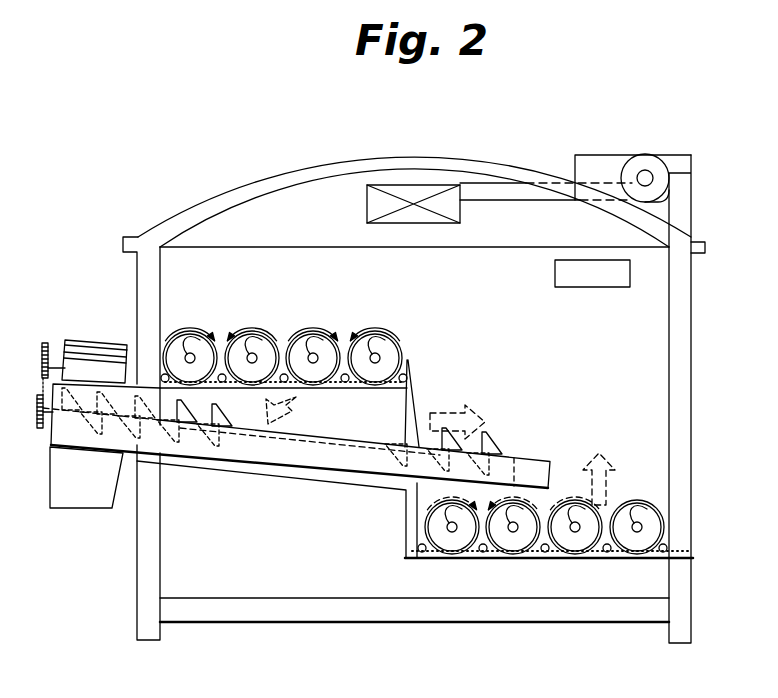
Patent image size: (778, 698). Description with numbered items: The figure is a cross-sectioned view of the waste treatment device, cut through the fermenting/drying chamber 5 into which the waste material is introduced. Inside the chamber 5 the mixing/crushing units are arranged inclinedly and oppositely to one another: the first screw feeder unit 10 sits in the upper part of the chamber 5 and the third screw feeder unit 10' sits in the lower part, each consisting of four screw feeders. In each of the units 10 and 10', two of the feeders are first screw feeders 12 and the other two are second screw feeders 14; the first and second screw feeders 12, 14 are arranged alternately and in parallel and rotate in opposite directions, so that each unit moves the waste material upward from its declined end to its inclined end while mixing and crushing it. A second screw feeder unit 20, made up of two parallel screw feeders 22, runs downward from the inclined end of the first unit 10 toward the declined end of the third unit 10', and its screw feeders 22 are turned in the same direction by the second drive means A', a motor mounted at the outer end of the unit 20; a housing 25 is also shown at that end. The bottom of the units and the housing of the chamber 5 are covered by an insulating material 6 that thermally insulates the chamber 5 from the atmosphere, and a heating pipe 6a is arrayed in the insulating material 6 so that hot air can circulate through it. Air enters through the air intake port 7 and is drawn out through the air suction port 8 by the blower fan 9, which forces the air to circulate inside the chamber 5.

The fermenting/drying chamber 5 is at (297, 217).
The insulating material 6 is at (200, 207).
The air intake port 7 is at (627, 287).
The air suction port 8 is at (414, 185).
The blower fan 9 is at (647, 178).
The first screw feeder unit 10 is at (327, 359).
The third screw feeder unit 10' is at (551, 472).
The first screw feeders 12 is at (213, 330).
The second screw feeders 14 is at (258, 328).
The heating pipe 6a is at (403, 380).
The second screw feeder unit 20 is at (347, 466).
The screw feeders 22 is at (218, 472).
The drive housing 25 is at (82, 510).
The second drive means A' is at (82, 355).